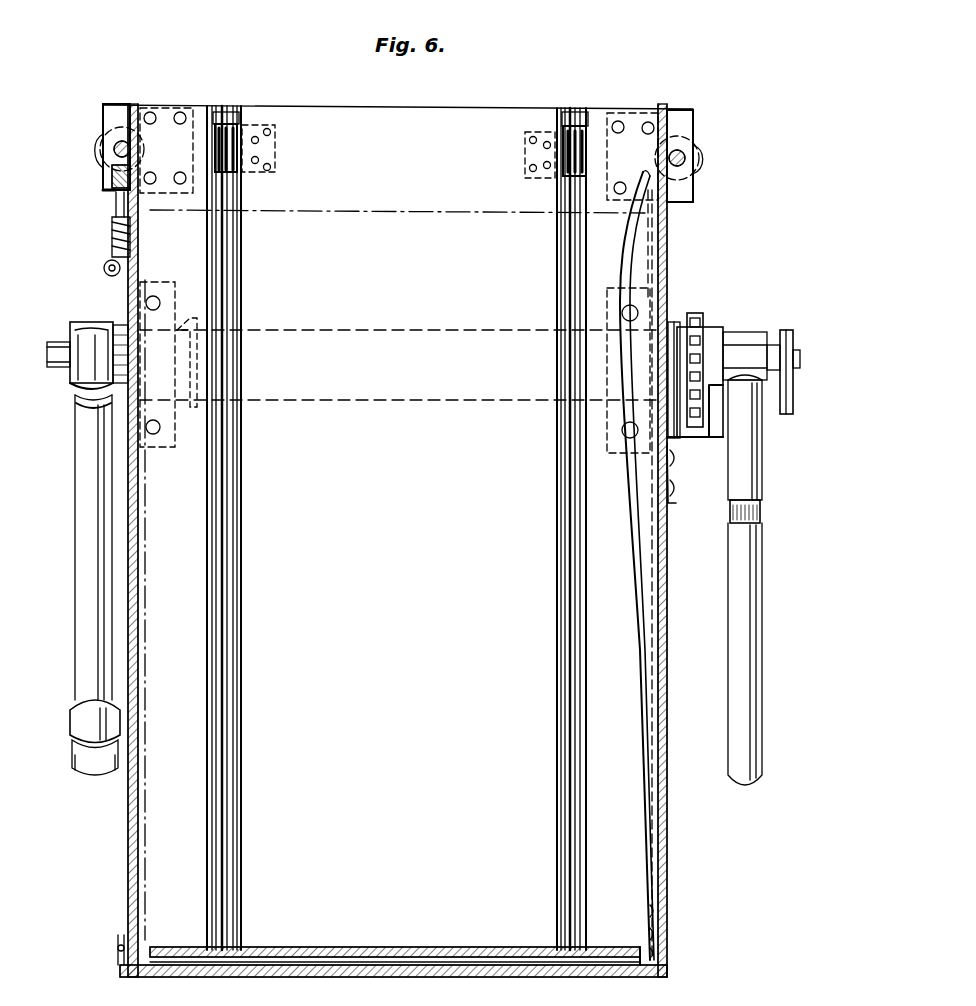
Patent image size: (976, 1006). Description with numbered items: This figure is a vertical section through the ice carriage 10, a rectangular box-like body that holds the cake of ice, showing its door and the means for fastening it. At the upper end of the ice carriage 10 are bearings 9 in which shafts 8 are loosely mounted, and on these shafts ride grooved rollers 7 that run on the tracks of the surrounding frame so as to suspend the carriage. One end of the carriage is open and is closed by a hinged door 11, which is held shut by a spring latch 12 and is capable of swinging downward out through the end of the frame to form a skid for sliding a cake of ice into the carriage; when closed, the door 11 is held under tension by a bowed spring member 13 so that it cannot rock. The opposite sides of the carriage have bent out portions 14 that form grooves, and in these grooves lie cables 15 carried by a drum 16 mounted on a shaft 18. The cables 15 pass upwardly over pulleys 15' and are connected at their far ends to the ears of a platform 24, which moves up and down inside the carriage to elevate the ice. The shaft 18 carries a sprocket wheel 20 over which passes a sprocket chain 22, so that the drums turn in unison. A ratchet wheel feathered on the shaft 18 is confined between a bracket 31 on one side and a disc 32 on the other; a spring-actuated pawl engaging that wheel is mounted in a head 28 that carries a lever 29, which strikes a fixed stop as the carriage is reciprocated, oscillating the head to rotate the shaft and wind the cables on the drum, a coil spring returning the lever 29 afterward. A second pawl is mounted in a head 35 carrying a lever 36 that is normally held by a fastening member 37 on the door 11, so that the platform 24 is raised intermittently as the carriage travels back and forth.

The grooved rollers 7 is at (97, 152).
The shafts 8 is at (118, 146).
The bearings 9 is at (112, 106).
The ice carriage 10 is at (395, 413).
The hinged door 11 is at (132, 636).
The spring latch 12 is at (112, 237).
The bowed spring member 13 is at (632, 488).
The bent out portions 14 is at (218, 303).
The cables 15 is at (406, 528).
The pulleys 15' is at (416, 122).
The drum 16 is at (426, 332).
The shaft 18 is at (190, 326).
The sprocket wheel 20 is at (706, 337).
The sprocket chain 22 is at (698, 318).
The platform 24 is at (384, 947).
The head 28 is at (745, 484).
The lever 29 is at (745, 662).
The bracket 31 is at (707, 432).
The disc 32 is at (787, 340).
The head 35 is at (92, 322).
The lever 36 is at (76, 516).
The fastening member 37 is at (72, 722).